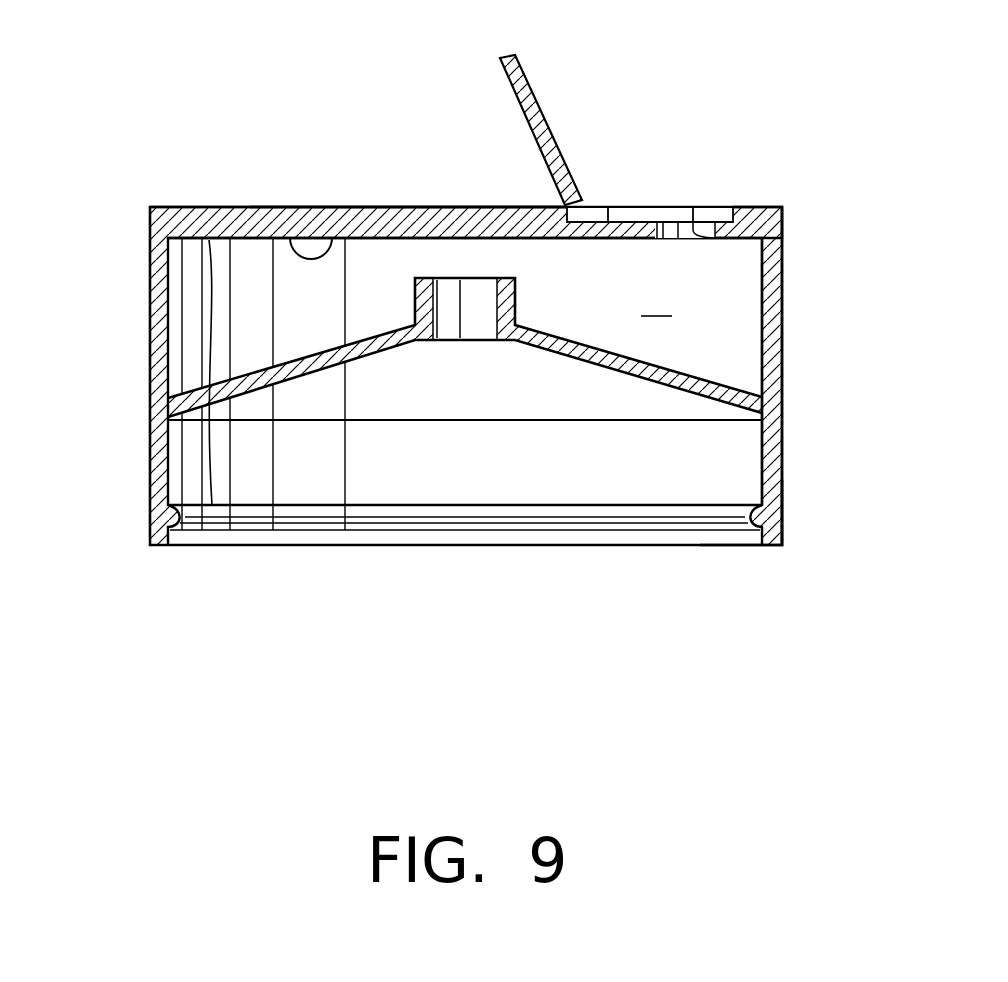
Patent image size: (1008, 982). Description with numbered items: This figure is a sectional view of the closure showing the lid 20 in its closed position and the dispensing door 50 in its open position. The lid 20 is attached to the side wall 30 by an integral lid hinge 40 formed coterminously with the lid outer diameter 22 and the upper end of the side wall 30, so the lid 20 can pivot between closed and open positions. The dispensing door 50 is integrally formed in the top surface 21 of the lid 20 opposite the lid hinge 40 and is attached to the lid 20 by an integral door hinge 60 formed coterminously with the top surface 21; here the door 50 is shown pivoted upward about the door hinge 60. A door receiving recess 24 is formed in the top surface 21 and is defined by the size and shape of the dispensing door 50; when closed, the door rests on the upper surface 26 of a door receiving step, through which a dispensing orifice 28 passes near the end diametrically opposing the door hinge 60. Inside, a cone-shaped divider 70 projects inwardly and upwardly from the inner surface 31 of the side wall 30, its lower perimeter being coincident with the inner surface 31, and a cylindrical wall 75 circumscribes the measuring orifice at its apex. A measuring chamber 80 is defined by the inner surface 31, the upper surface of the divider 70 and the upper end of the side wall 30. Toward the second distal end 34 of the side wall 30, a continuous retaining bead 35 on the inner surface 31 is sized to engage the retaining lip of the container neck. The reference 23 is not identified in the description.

The lid 20 is at (268, 220).
The top surface 21 is at (335, 208).
The outer diameter 22 is at (755, 208).
The bump 23 is at (293, 246).
The door receiving recess 24 is at (630, 209).
The upper surface 26 is at (607, 209).
The dispensing orifice 28 is at (694, 222).
The side wall 30 is at (783, 352).
The inner surface 31 is at (465, 354).
The second distal end 34 is at (783, 546).
The continuous retaining bead 35 is at (318, 520).
The lid hinge 40 is at (150, 211).
The dispensing door 50 is at (540, 92).
The door hinge 60 is at (565, 205).
The cone-shaped divider 70 is at (209, 240).
The cylindrical wall 75 is at (415, 296).
The measuring chamber 80 is at (186, 298).